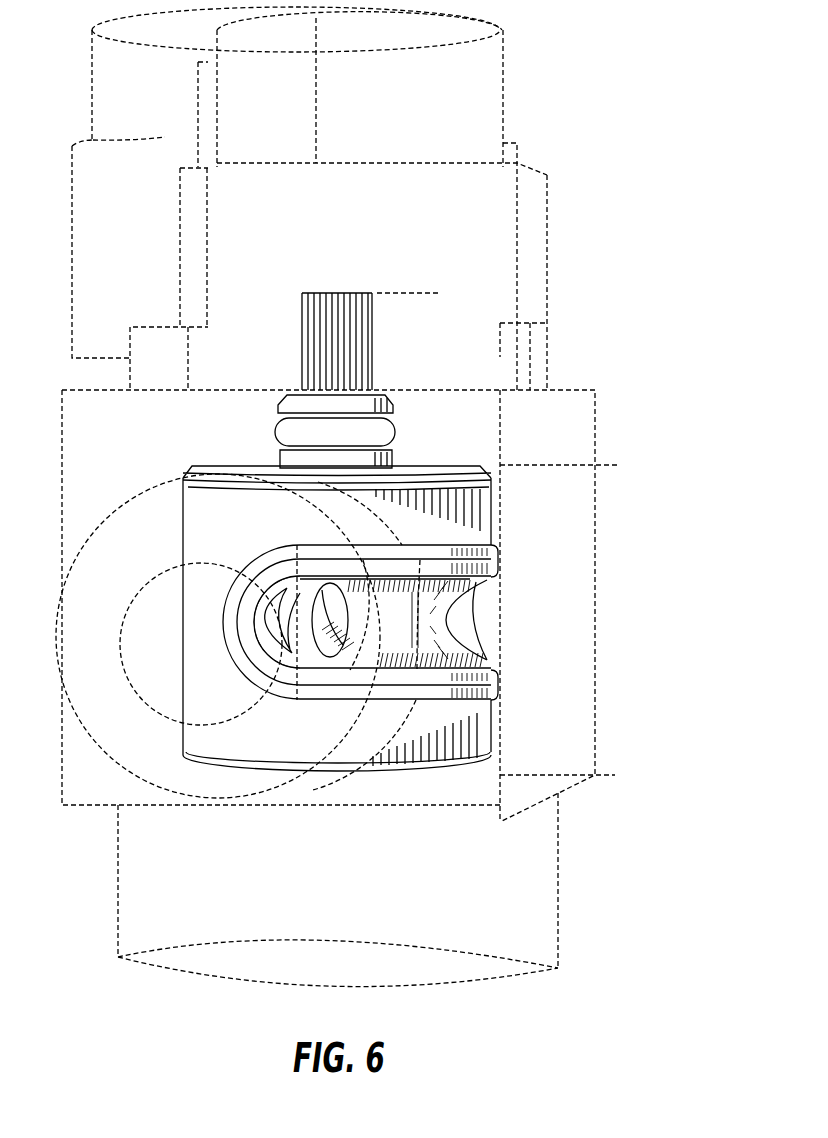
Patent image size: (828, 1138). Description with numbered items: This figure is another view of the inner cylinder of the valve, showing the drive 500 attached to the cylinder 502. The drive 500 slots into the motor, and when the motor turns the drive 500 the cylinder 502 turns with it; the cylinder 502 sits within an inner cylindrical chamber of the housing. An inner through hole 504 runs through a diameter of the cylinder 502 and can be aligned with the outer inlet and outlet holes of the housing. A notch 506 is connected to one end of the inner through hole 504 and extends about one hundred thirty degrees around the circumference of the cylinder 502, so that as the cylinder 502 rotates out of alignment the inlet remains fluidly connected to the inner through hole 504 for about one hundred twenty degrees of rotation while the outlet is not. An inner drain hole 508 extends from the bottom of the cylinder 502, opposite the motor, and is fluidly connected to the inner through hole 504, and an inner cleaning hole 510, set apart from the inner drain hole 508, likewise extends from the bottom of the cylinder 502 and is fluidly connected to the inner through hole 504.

The drive 500 is at (430, 293).
The cylinder 502 is at (612, 463).
The inner through hole 504 is at (287, 659).
The notch 506 is at (465, 619).
The inner drain hole 508 is at (323, 607).
The inner cleaning hole 510 is at (267, 610).